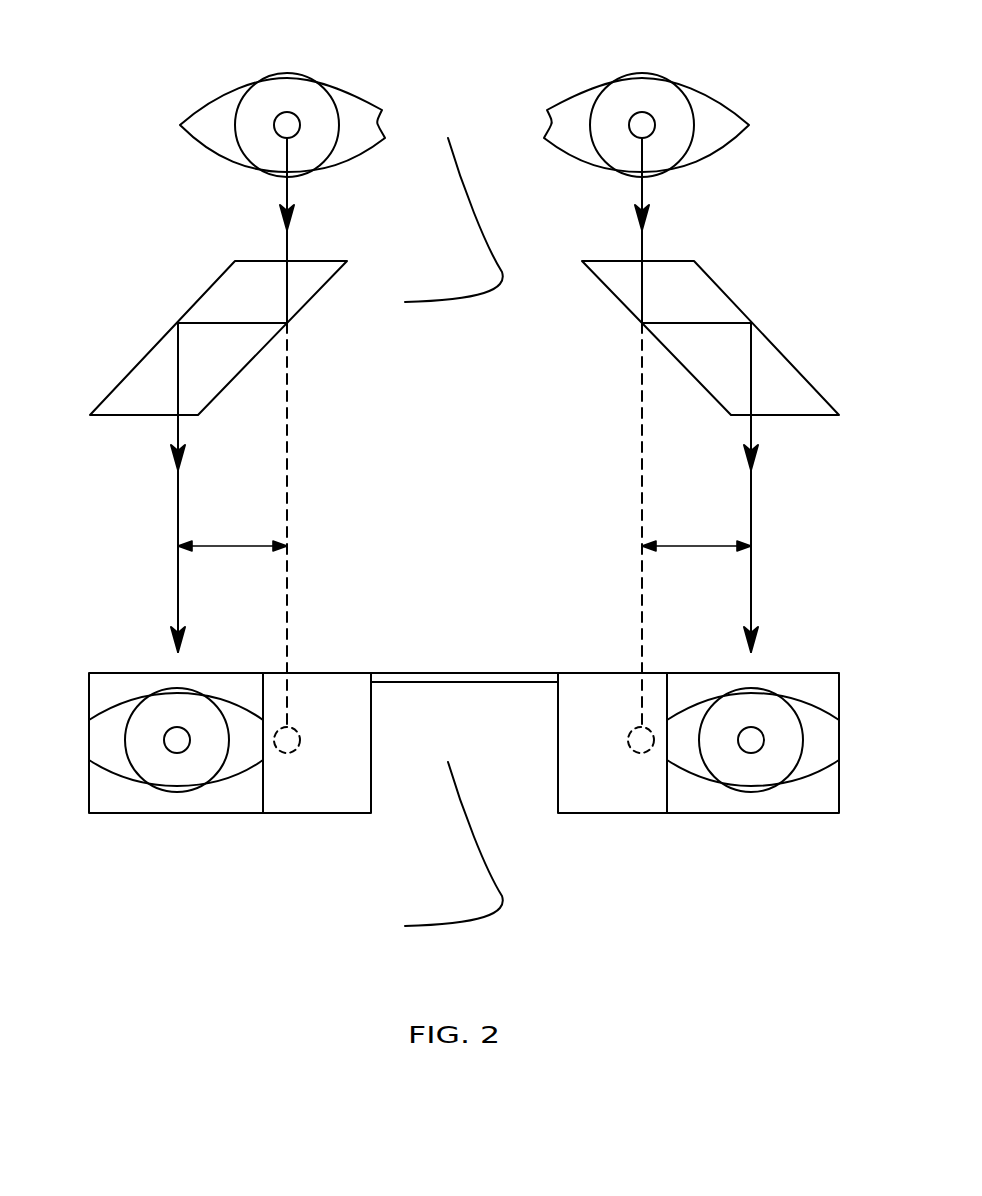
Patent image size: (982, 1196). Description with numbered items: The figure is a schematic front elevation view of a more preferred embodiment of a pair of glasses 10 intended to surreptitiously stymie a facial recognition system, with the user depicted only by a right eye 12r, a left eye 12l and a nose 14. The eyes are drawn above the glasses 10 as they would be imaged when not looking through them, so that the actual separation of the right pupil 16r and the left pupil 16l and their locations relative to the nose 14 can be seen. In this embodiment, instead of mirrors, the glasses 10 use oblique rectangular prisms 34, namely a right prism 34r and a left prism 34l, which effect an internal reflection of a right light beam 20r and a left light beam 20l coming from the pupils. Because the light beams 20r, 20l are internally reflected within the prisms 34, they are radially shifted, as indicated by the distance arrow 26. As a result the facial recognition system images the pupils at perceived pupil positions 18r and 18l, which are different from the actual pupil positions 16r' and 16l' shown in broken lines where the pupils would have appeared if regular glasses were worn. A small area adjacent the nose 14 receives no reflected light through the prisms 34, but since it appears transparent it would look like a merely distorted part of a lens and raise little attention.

The glasses 10 is at (438, 655).
The right eye 12r is at (208, 97).
The left eye 12l is at (725, 102).
The nose 14 is at (470, 214).
The right pupil 16r is at (327, 75).
The left pupil 16l is at (666, 79).
The actual right pupil position 16r' is at (310, 800).
The actual left pupil position 16l' is at (630, 799).
The perceived right pupil position 18r is at (177, 752).
The perceived left pupil position 18l is at (752, 752).
The right light beam 20r is at (178, 523).
The left light beam 20l is at (752, 513).
The distance arrow 26 is at (230, 545).
The prisms 34 is at (105, 683).
The right oblique rectangular prism 34r is at (313, 293).
The left oblique rectangular prism 34l is at (617, 302).